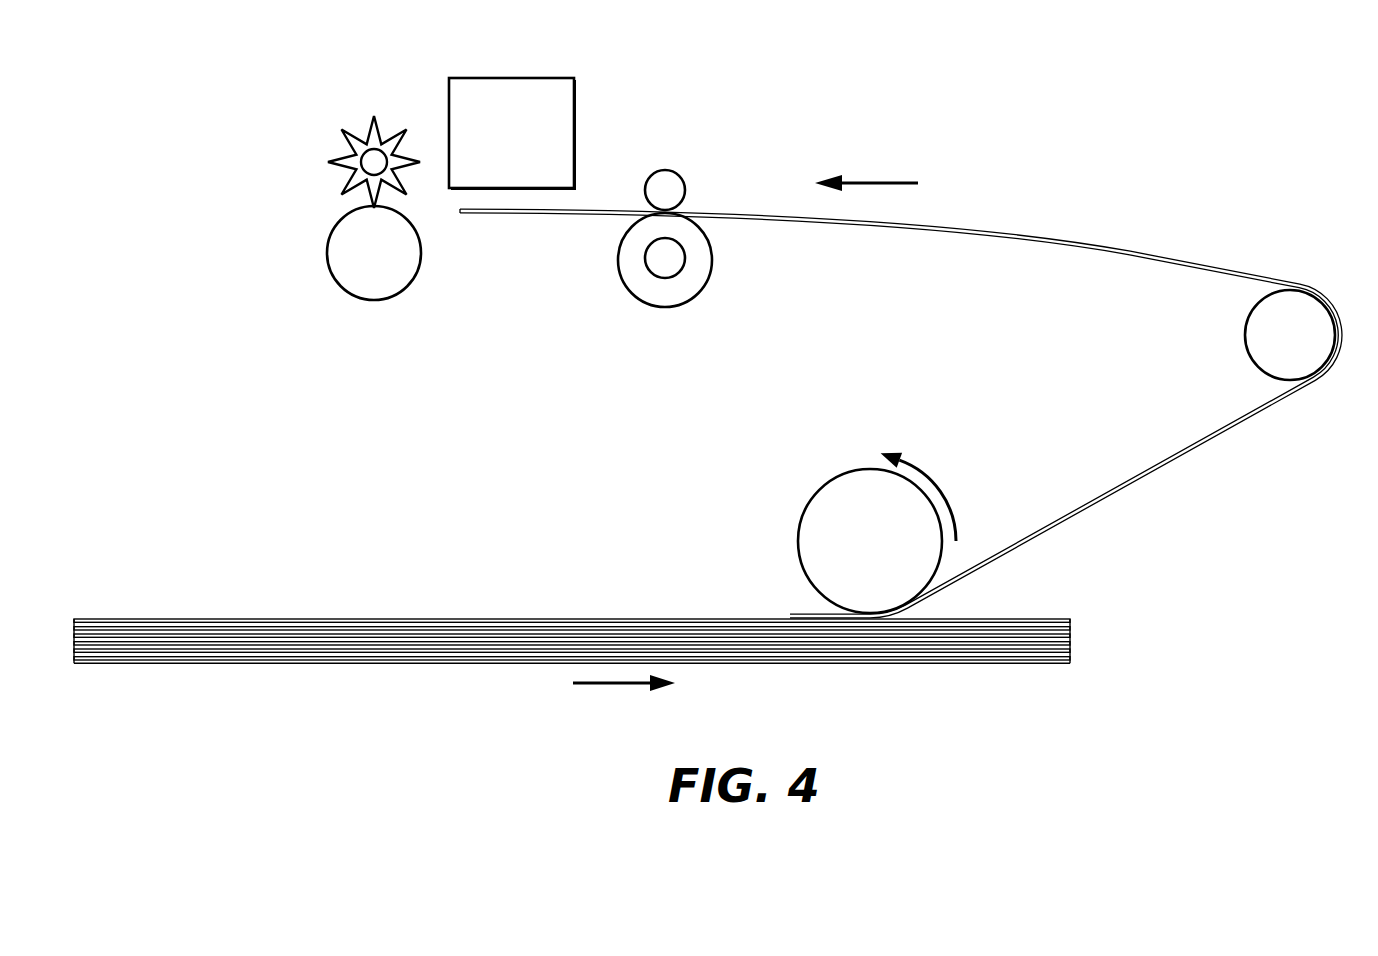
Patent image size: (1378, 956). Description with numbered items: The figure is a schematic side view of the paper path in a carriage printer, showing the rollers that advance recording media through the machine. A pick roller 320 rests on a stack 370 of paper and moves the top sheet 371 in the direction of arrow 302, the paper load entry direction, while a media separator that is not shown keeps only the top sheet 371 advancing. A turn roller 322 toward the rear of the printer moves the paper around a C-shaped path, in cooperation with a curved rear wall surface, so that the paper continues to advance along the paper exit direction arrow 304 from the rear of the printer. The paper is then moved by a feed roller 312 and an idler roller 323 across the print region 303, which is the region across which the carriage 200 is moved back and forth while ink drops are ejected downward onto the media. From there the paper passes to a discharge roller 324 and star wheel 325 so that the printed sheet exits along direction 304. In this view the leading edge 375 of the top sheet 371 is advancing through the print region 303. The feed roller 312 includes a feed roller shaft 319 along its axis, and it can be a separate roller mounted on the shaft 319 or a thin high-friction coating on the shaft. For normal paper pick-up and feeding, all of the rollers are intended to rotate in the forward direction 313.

The carriage 200 is at (508, 77).
The paper load entry direction 302 is at (615, 685).
The print region 303 is at (572, 200).
The paper exit direction 304 is at (872, 183).
The feed roller 312 is at (712, 270).
The forward direction 313 is at (930, 478).
The feed roller shaft 319 is at (650, 266).
The pick roller 320 is at (812, 497).
The turn roller 322 is at (1246, 343).
The idler roller 323 is at (670, 171).
The discharge roller 324 is at (327, 262).
The star wheel 325 is at (366, 130).
The stack 370 is at (1085, 643).
The top sheet 371 is at (1117, 500).
The leading edge 375 is at (458, 213).